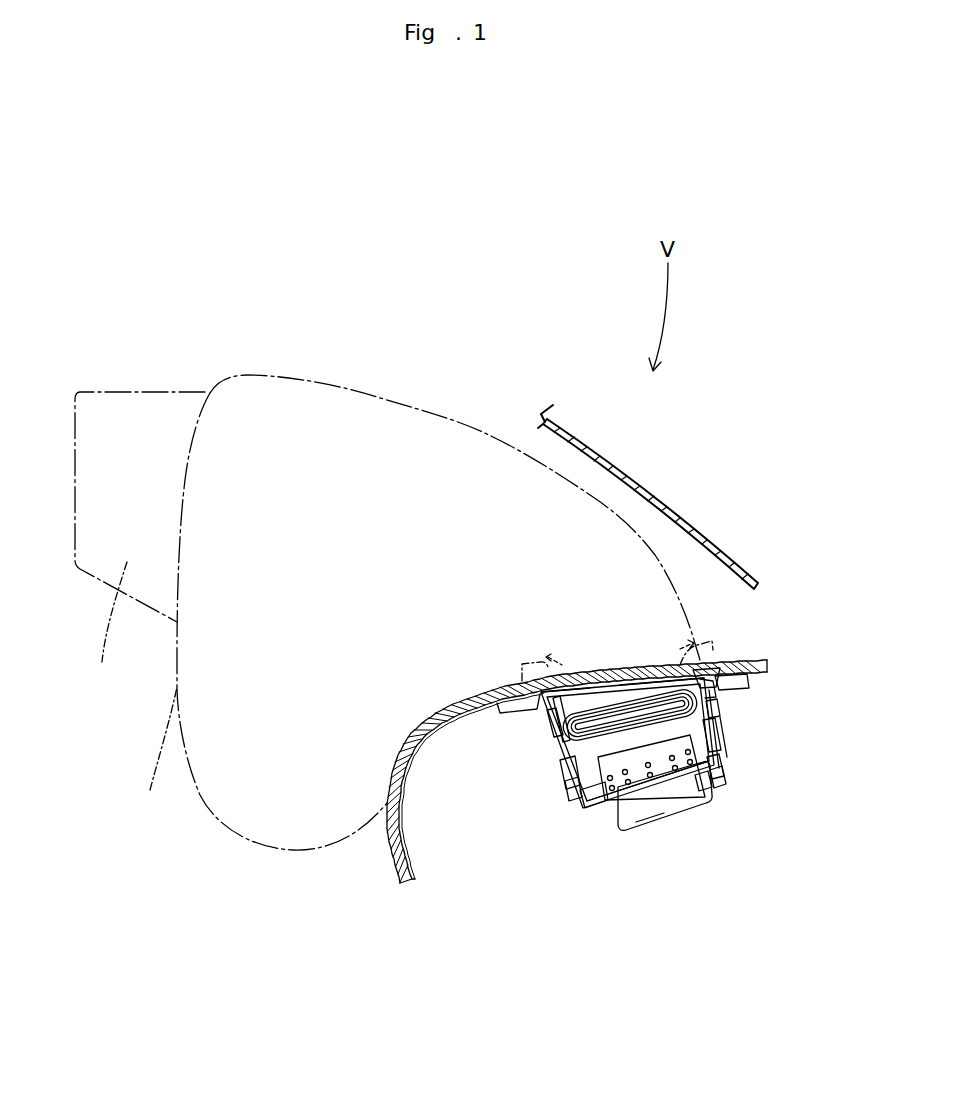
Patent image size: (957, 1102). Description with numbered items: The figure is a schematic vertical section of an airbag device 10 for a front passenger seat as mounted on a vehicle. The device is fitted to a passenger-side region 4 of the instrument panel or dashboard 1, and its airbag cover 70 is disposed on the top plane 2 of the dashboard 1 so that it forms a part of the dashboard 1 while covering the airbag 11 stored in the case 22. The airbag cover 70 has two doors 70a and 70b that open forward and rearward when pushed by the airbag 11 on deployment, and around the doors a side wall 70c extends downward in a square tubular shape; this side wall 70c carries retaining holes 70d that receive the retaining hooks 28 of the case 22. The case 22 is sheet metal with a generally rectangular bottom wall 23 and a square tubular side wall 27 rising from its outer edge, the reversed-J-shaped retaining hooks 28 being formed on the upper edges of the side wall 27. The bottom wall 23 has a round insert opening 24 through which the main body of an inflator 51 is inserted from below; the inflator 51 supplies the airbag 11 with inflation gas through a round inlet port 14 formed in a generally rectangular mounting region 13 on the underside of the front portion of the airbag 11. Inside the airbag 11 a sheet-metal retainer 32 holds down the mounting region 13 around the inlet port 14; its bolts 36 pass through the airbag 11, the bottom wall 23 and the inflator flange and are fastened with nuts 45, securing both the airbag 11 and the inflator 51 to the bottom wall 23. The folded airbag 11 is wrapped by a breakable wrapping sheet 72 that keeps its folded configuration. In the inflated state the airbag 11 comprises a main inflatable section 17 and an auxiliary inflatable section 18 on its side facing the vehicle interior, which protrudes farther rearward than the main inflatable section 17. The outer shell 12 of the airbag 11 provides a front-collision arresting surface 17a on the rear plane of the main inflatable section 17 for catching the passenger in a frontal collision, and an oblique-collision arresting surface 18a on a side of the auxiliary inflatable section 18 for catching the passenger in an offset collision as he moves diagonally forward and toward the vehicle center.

The instrument panel or dashboard 1 is at (380, 866).
The top plane 2 is at (737, 652).
The passenger-side region 4 is at (577, 771).
The airbag device 10 is at (757, 803).
The airbag 11 is at (273, 252).
The outer shell 12 is at (405, 400).
The mounting region 13 is at (673, 790).
The inlet port 14 is at (640, 810).
The main inflatable section 17 is at (263, 362).
The front-collision arresting surface 17a is at (153, 753).
The auxiliary inflatable section 18 is at (140, 380).
The oblique-collision arresting surface 18a is at (105, 628).
The case 22 is at (568, 922).
The bottom wall 23 is at (587, 810).
The insert opening 24 is at (607, 803).
The side wall 27 is at (572, 788).
The retaining hook 28 is at (565, 775).
The retainer 32 is at (727, 727).
The bolt 36 is at (703, 777).
The nut 45 is at (717, 777).
The inflator 51 is at (650, 812).
The airbag cover 70 is at (642, 566).
The door 70a is at (692, 640).
The door 70b is at (580, 677).
The side wall 70c is at (549, 722).
The retaining hole 70d is at (560, 752).
The wrapping sheet 72 is at (602, 700).